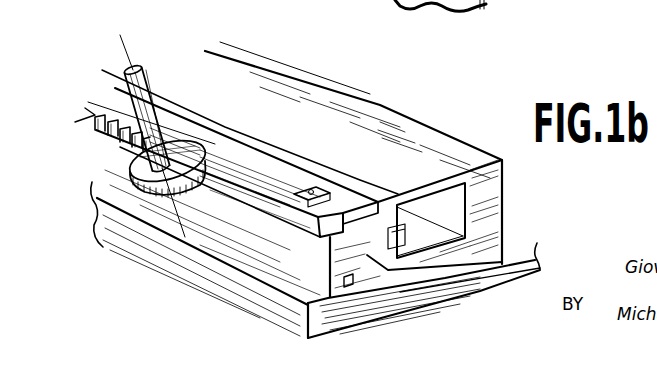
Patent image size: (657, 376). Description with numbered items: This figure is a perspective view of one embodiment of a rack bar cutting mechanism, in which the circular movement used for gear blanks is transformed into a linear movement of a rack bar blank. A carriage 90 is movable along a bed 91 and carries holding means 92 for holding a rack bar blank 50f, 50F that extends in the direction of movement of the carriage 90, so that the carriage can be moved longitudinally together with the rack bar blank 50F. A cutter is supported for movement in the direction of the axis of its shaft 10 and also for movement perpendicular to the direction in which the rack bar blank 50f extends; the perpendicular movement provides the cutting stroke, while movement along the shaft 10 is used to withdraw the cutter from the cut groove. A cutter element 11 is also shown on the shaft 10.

The shaft 10 is at (146, 78).
The knob 11 is at (190, 146).
The rack bar blank 50f is at (97, 134).
The rack bar blank 50F is at (325, 214).
The carriage 90 is at (362, 268).
The bed 91 is at (503, 206).
The holding means 92 is at (323, 187).